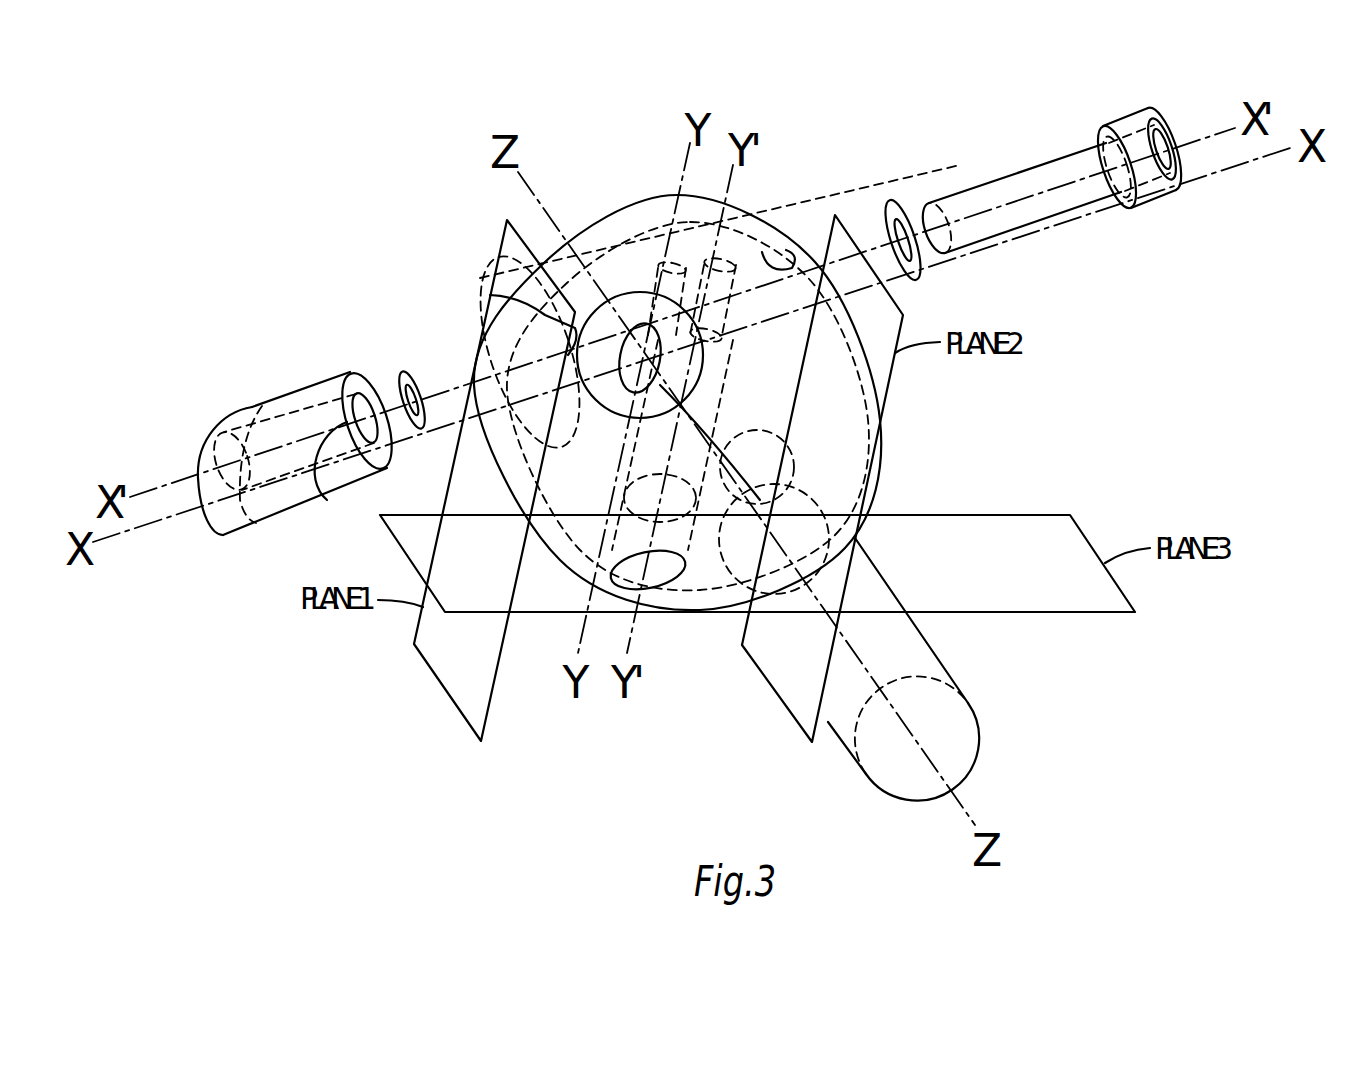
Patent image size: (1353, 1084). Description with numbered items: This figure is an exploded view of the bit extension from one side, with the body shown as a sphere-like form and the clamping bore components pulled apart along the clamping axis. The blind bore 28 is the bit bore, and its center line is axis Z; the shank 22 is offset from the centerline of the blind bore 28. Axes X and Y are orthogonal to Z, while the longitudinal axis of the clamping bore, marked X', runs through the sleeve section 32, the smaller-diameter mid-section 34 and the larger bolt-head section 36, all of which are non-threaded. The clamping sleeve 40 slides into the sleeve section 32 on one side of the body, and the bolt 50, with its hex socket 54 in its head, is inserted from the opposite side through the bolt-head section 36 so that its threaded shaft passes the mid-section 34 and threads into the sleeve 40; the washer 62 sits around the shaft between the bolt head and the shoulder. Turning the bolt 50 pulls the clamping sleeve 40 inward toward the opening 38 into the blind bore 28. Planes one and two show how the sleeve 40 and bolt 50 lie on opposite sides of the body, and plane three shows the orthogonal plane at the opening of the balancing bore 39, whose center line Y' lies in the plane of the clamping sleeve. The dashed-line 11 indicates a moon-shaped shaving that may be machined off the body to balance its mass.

The dashed-line 11 is at (667, 197).
The shank portion 22 is at (940, 661).
The blind bore 28 is at (490, 295).
The sleeve section 32 is at (560, 285).
The mid-section 34 is at (630, 226).
The bolt-head section 36 is at (762, 252).
The opening 38 is at (703, 365).
The balancing bore 39 is at (628, 578).
The clamping sleeve 40 is at (290, 382).
The bolt 50 is at (1013, 170).
The hex socket 54 is at (1172, 150).
The washer 62 is at (914, 270).